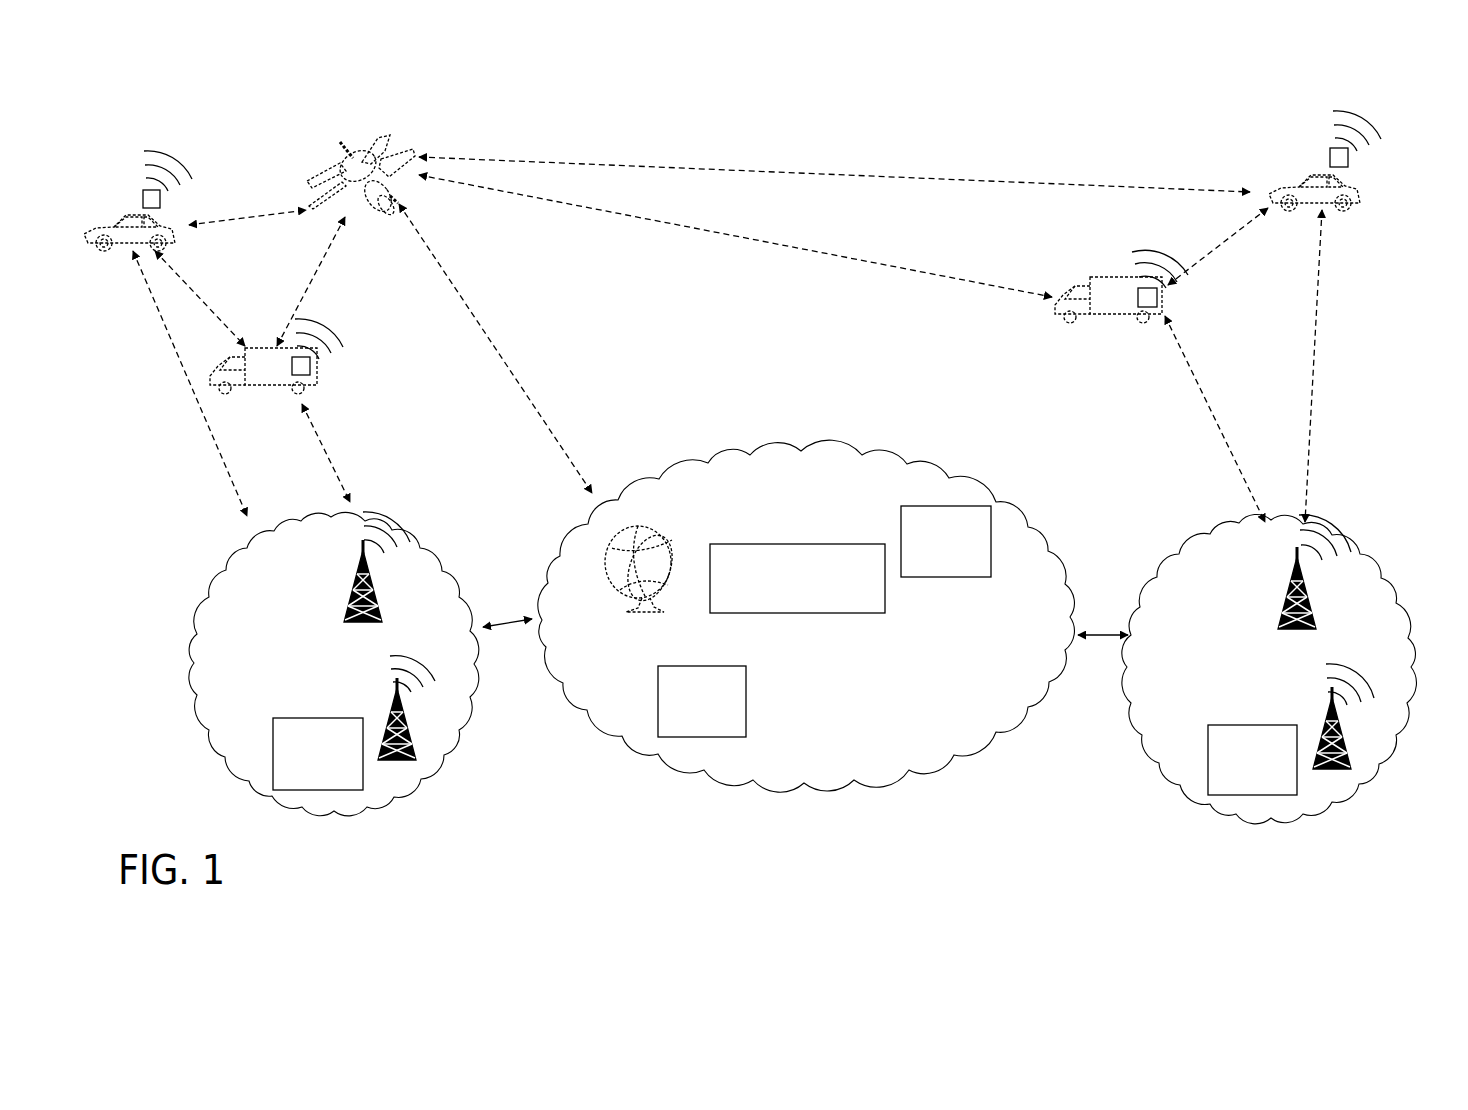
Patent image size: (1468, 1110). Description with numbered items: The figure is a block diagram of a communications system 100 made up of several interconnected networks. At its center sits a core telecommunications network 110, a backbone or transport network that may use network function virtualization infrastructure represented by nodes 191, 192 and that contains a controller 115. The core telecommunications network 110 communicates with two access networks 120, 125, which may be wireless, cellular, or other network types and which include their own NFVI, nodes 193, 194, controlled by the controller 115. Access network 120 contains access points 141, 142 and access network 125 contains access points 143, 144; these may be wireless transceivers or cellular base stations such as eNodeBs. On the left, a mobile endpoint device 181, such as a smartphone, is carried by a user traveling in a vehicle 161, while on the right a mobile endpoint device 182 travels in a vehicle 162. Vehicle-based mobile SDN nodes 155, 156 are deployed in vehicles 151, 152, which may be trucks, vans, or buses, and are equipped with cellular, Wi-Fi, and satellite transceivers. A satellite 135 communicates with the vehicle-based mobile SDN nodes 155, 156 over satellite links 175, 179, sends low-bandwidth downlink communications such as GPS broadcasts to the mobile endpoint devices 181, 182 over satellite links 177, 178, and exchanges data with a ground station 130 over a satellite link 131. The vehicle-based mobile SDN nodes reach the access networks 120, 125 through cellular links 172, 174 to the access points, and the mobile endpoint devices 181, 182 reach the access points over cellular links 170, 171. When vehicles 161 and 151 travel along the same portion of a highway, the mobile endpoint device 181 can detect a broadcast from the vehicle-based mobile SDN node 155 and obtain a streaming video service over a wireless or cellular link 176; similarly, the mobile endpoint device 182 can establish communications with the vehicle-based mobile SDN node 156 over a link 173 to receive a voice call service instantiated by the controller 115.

The system 100 is at (150, 70).
The core telecommunications network 110 is at (825, 671).
The controller 115 is at (815, 607).
The access network 120 is at (353, 677).
The access network 125 is at (1287, 685).
The ground station 130 is at (636, 522).
The satellite link 131 is at (522, 385).
The satellite 135 is at (399, 126).
The access point 141 is at (346, 573).
The access point 142 is at (417, 717).
The access point 143 is at (1281, 580).
The access point 144 is at (1352, 733).
The vehicle 151 is at (242, 398).
The vehicle 152 is at (1106, 328).
The vehicle-based mobile SDN node 155 is at (312, 367).
The vehicle-based mobile SDN node 156 is at (1159, 297).
The vehicle 161 is at (120, 252).
The vehicle 162 is at (1358, 212).
The link 170 is at (200, 415).
The link 171 is at (1310, 397).
The link 172 is at (1210, 397).
The link 173 is at (1212, 255).
The link 174 is at (333, 453).
The satellite link 175 is at (310, 282).
The link 176 is at (200, 300).
The satellite link 177 is at (255, 212).
The satellite link 178 is at (1140, 185).
The satellite link 179 is at (878, 264).
The mobile endpoint device 181 is at (142, 199).
The mobile endpoint device 182 is at (1329, 156).
The node 191 is at (720, 730).
The node 192 is at (964, 569).
The node 193 is at (336, 780).
The node 194 is at (1271, 787).